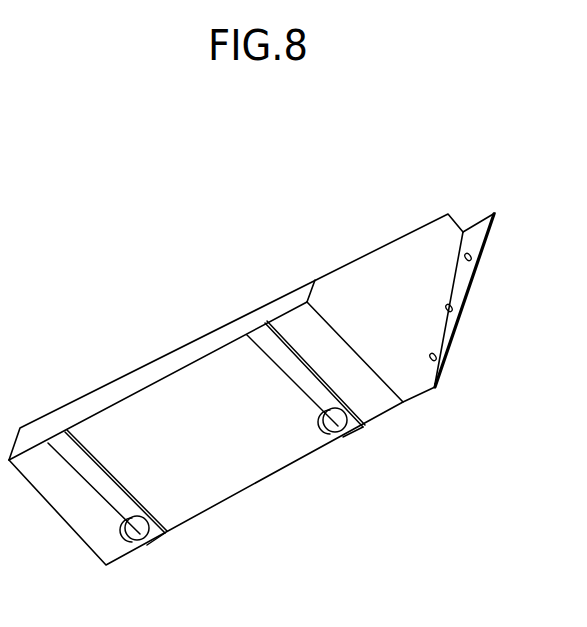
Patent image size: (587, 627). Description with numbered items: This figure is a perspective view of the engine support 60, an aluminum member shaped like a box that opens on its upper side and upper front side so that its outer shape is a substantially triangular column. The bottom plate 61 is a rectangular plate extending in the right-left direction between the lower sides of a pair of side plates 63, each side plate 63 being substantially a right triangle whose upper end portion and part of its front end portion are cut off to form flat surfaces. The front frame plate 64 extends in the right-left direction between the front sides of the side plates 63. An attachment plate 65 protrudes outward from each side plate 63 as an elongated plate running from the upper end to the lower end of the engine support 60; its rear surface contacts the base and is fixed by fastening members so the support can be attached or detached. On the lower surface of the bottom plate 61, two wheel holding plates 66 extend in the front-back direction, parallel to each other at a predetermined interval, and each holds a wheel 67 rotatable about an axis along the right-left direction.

The engine support 60 is at (344, 225).
The bottom plate 61 is at (238, 478).
The side plate 63 is at (422, 238).
The front frame plate 64 is at (200, 345).
The attachment plate 65 is at (475, 238).
The wheel holding plate 66 is at (155, 537).
The wheel 67 is at (137, 541).